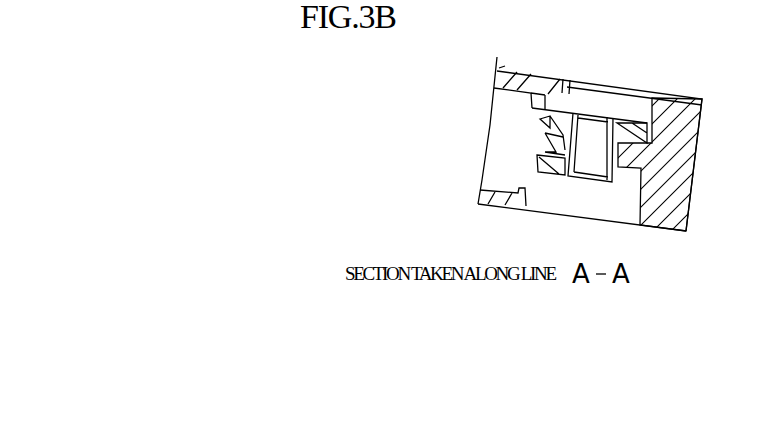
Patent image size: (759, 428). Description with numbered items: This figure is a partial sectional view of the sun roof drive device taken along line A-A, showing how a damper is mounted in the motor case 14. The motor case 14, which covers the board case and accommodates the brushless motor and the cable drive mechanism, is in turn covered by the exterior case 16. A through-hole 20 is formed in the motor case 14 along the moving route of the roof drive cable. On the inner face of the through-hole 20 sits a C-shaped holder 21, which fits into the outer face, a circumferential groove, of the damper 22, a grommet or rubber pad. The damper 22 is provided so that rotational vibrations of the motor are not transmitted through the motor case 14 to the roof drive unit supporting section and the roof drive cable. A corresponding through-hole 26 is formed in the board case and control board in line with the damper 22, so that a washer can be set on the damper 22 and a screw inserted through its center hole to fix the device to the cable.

The motor case 14 is at (678, 112).
The exterior case 16 is at (528, 82).
The through-hole 20 is at (613, 101).
The C-shaped holder 21 is at (540, 131).
The damper 22 is at (634, 122).
The through-hole 26 is at (608, 205).